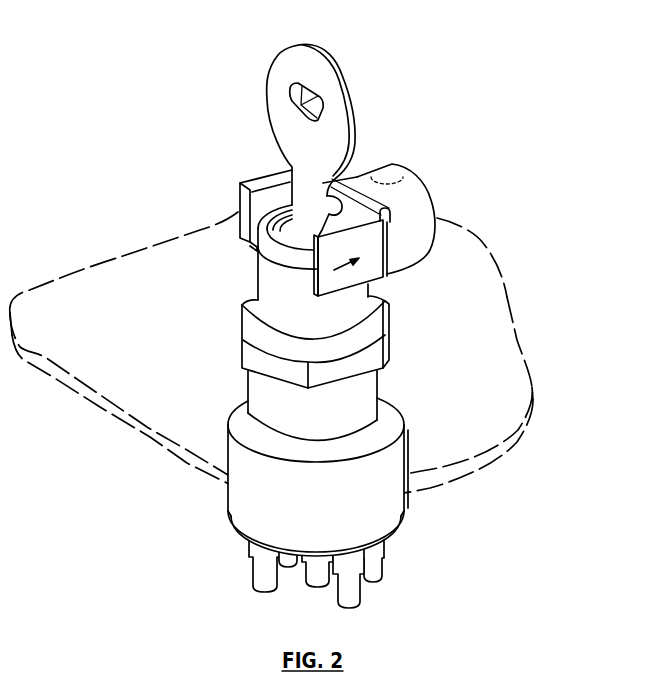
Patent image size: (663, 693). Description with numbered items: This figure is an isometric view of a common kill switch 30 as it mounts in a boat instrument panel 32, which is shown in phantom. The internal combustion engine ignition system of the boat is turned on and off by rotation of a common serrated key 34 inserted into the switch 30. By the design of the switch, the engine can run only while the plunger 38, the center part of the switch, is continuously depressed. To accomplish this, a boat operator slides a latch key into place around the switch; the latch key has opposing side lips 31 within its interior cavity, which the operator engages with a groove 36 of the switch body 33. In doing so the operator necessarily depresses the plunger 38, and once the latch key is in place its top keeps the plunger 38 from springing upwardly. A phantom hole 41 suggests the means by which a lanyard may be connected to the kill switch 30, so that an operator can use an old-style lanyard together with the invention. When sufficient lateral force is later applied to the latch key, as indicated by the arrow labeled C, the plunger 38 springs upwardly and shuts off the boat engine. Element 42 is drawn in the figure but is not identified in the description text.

The kill switch 30 is at (410, 510).
The opposing side lips 31 is at (258, 232).
The boat instrument panel 32 is at (452, 357).
The switch body 33 is at (282, 302).
The serrated key 34 is at (292, 71).
The groove 36 is at (272, 268).
The plunger 38 is at (268, 199).
The phantom hole 41 is at (393, 170).
The flange 42 is at (437, 218).